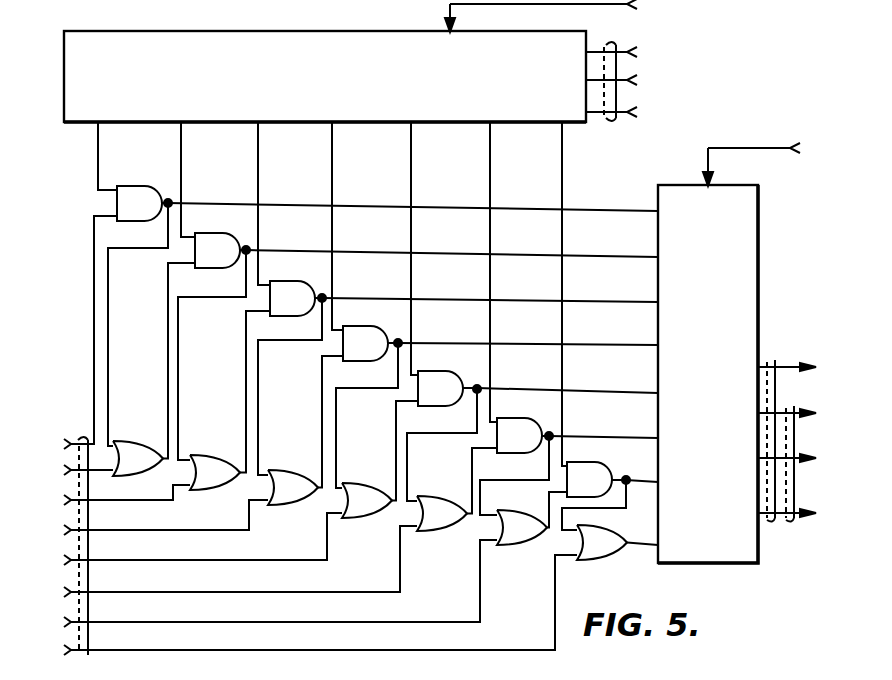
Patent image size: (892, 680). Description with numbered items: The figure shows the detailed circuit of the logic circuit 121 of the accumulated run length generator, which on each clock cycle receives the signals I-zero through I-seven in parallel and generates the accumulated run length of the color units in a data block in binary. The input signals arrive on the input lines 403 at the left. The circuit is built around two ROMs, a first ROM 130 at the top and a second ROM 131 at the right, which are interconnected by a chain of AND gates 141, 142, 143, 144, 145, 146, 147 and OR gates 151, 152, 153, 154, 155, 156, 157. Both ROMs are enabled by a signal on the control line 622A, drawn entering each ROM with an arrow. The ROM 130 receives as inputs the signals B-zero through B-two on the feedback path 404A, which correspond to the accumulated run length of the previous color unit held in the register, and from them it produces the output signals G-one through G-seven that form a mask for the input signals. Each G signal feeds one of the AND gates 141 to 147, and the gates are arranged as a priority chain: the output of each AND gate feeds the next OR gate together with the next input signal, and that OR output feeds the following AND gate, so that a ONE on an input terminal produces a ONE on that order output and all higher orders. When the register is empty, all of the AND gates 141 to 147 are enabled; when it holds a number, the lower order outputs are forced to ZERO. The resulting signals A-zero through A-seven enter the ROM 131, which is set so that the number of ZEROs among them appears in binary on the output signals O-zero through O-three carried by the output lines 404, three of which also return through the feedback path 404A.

The logic circuit 121 is at (720, 603).
The ROM 130 is at (76, 31).
The ROM 131 is at (758, 258).
The AND gate 141 is at (124, 192).
The AND gate 142 is at (206, 246).
The AND gate 143 is at (279, 294).
The AND gate 144 is at (355, 340).
The AND gate 145 is at (436, 385).
The AND gate 146 is at (509, 434).
The AND gate 147 is at (597, 478).
The OR gate 151 is at (117, 446).
The OR gate 152 is at (192, 459).
The OR gate 153 is at (277, 474).
The OR gate 154 is at (346, 489).
The OR gate 155 is at (419, 502).
The OR gate 156 is at (506, 519).
The OR gate 157 is at (611, 544).
The input lines 403 is at (88, 655).
The output lines 404 is at (769, 364).
The feedback path 404A is at (620, 43).
The control signal line 622A is at (526, 8).